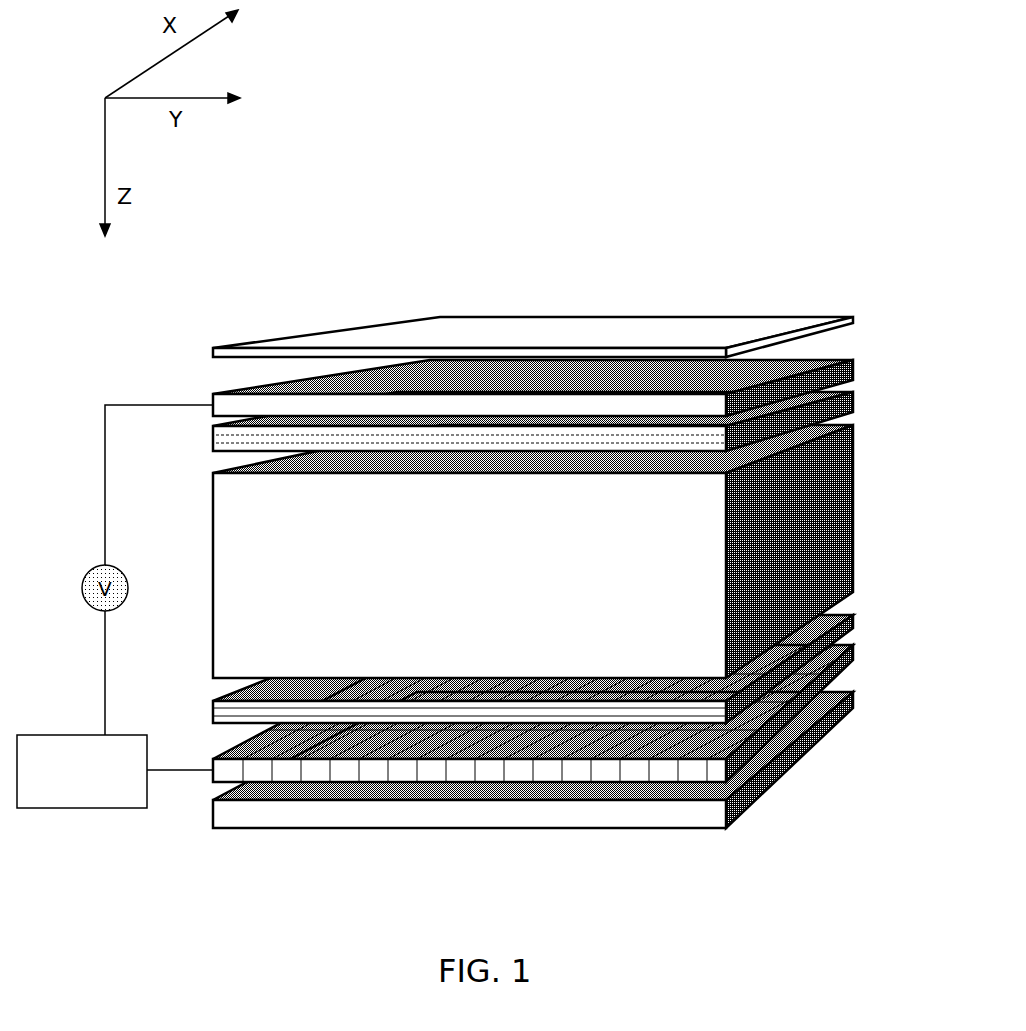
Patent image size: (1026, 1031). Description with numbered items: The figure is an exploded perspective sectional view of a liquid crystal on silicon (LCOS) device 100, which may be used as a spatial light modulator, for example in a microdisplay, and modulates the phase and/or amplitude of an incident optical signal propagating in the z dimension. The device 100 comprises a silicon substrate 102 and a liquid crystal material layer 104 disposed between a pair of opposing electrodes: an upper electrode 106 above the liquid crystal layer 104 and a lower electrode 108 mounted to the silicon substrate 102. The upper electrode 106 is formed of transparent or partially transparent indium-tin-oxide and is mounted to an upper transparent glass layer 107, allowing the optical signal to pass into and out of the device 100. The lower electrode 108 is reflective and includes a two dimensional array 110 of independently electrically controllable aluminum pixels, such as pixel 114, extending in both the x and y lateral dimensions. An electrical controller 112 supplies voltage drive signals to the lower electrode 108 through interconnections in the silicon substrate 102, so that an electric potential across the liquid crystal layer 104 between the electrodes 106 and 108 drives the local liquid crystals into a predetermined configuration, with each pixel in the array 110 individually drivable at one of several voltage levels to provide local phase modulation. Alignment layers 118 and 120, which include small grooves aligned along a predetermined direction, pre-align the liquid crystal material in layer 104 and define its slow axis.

The liquid crystal on silicon (LCOS) device 100 is at (574, 247).
The silicon substrate 102 is at (240, 813).
The liquid crystal material layer 104 is at (833, 548).
The upper electrode 106 is at (855, 360).
The upper transparent glass layer 107 is at (772, 328).
The lower electrode 108 is at (853, 663).
The two dimensional array 110 is at (813, 735).
The electrical controller 112 is at (108, 808).
The pixel 114 is at (443, 762).
The alignment layer 118 is at (853, 632).
The alignment layer 120 is at (855, 391).